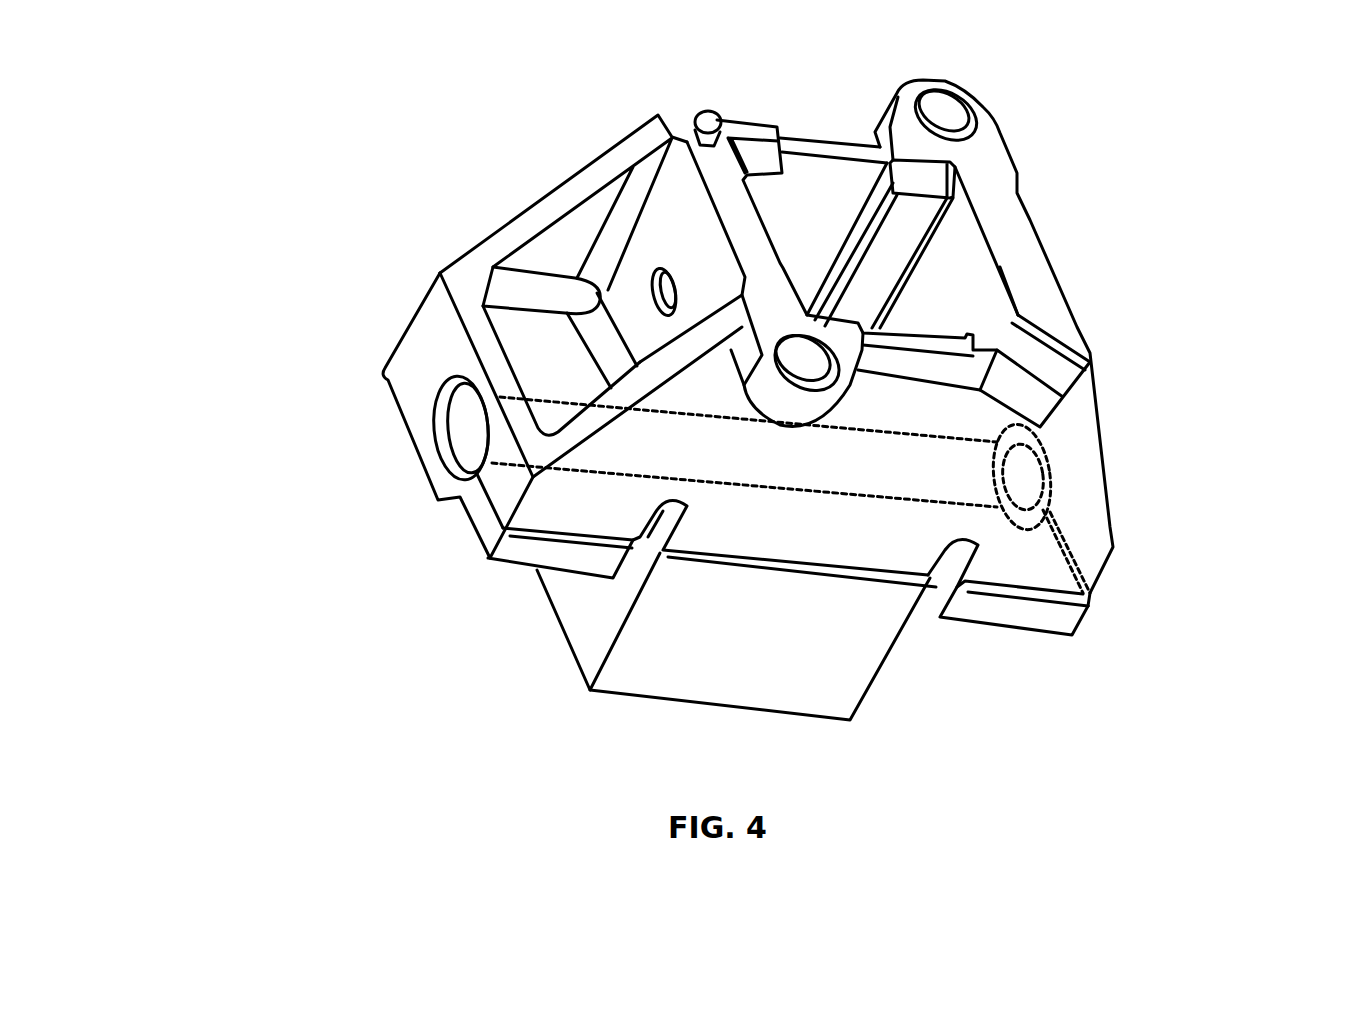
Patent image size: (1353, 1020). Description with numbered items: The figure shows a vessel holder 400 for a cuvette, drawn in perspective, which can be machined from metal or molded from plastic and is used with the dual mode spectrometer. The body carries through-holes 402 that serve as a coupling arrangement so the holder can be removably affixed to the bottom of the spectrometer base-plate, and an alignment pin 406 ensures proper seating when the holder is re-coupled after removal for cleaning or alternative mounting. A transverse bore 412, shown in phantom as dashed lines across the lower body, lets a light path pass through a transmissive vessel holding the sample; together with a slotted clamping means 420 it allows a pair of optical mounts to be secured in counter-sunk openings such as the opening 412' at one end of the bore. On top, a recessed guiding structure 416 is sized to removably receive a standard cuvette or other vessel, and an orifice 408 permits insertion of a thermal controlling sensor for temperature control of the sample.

The vessel holder 400 is at (323, 170).
The through-holes 402 is at (945, 117).
The alignment pin 406 is at (714, 110).
The orifice 408 is at (657, 290).
The transverse bore 412 is at (747, 566).
The counter-sunk opening 412' is at (356, 387).
The recessed guiding structure 416 is at (962, 263).
The slotted clamping means 420 is at (490, 555).